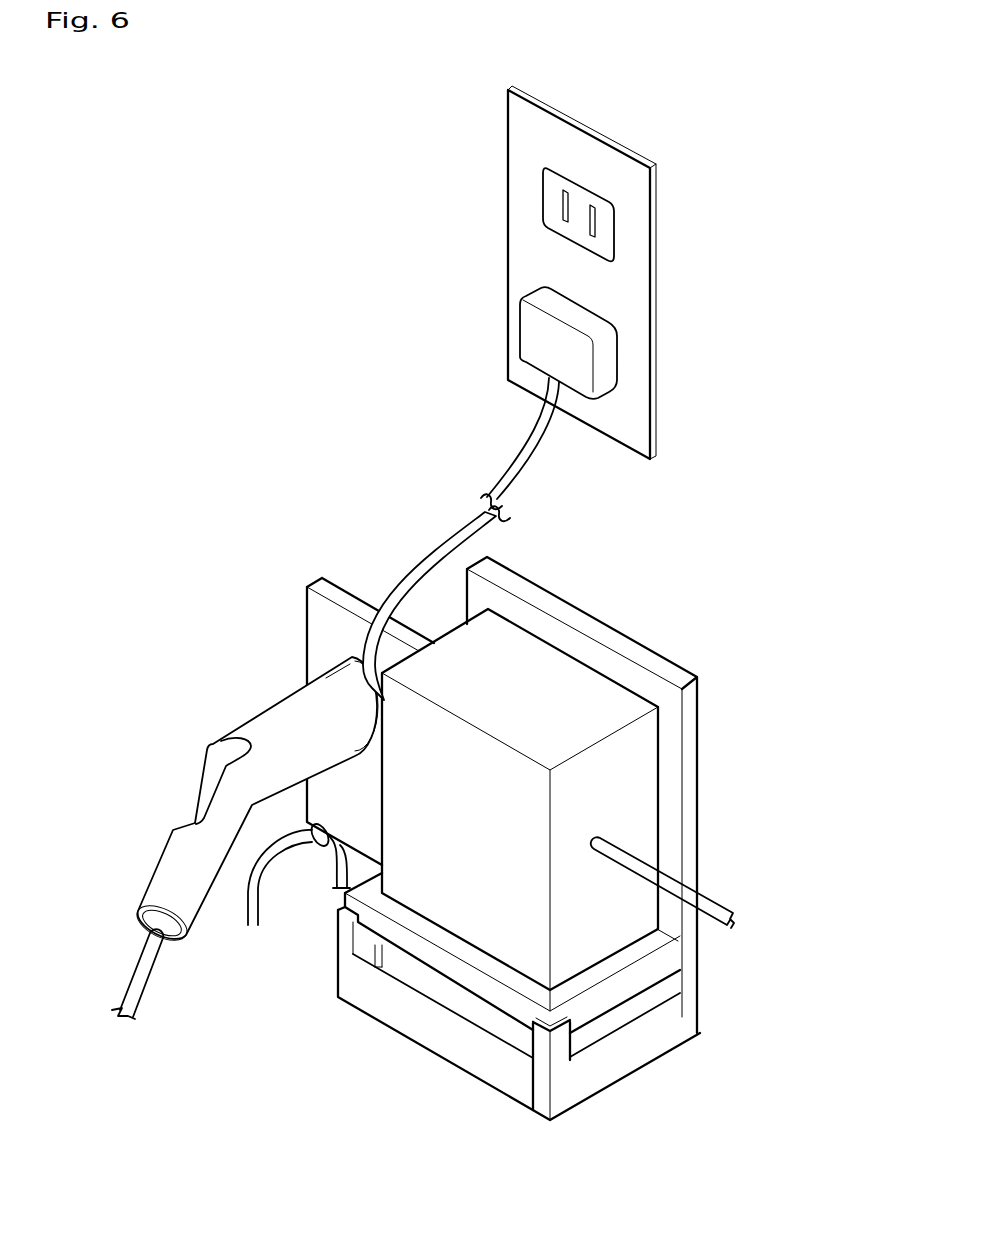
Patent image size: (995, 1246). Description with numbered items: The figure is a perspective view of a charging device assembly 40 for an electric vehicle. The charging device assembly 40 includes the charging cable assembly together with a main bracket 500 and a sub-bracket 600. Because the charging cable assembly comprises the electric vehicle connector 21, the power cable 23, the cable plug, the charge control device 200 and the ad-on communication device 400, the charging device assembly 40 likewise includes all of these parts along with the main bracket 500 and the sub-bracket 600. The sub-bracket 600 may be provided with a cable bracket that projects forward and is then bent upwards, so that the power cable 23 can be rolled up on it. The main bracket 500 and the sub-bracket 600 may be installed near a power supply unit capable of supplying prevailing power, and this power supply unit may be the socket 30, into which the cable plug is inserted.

The charging device assembly 40 is at (183, 142).
The socket 30 is at (538, 252).
The charge control device 200 is at (563, 680).
The main bracket 500 is at (690, 788).
The ad-on communication device 400 is at (607, 1001).
The sub-bracket 600 is at (316, 627).
The electric vehicle connector 21 is at (163, 869).
The power cable 23 is at (261, 888).